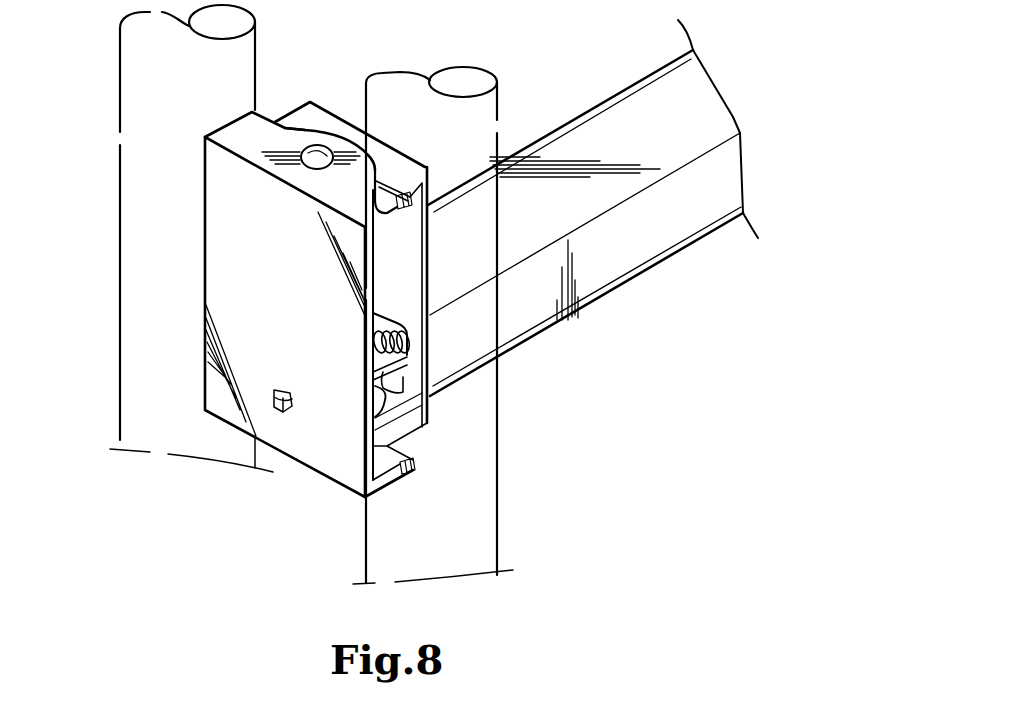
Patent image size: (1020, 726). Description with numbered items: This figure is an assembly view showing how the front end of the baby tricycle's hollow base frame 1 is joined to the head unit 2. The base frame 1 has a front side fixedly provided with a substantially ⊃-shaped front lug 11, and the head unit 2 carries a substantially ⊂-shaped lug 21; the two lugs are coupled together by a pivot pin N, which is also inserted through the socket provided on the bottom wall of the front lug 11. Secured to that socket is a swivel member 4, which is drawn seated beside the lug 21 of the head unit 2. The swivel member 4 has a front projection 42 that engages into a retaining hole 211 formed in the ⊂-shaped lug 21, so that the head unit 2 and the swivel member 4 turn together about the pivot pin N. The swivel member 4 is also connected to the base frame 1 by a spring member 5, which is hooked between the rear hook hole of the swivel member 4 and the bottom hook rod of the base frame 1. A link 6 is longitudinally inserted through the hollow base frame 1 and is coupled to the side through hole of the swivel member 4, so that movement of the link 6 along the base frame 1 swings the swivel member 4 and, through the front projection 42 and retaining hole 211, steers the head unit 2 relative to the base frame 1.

The hollow base frame 1 is at (657, 250).
The head unit 2 is at (247, 510).
The swivel member 4 is at (373, 410).
The spring member 5 is at (372, 335).
The link 6 is at (403, 377).
The front lug 11 is at (318, 113).
The lug 21 is at (222, 267).
The front projection 42 is at (285, 413).
The retaining hole 211 is at (277, 388).
The pivot pin N is at (318, 160).